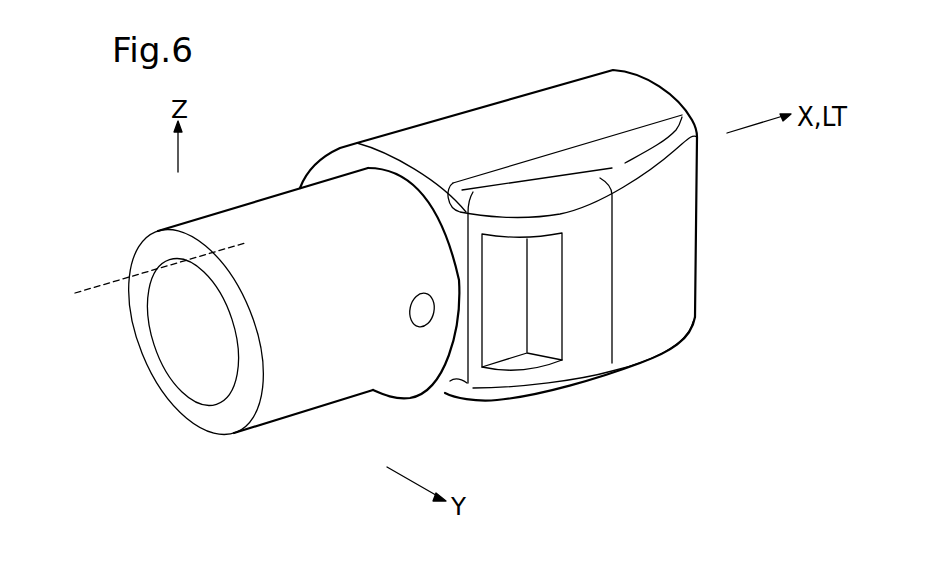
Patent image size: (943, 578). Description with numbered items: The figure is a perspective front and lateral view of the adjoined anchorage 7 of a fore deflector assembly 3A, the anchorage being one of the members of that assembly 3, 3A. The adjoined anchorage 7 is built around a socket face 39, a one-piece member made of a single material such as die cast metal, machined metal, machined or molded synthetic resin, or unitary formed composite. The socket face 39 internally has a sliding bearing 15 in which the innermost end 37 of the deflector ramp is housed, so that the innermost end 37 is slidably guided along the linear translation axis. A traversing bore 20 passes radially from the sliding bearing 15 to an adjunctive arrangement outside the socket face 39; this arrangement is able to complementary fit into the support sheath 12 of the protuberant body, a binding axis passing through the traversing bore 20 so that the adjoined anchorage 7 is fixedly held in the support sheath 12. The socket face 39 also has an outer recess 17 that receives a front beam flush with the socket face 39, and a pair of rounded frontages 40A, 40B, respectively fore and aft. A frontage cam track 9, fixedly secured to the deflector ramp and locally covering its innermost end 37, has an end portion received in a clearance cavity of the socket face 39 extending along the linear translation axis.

The connector 3 is at (427, 266).
The deflector assembly 3A is at (651, 456).
The adjoined anchorage 7 is at (333, 130).
The frontage cam track 9 is at (697, 273).
The support sheath 12 is at (235, 316).
The sliding bearing 15 is at (176, 376).
The socket face 39 is at (194, 402).
The outer recess 17 is at (543, 327).
The traversing bore 20 is at (410, 308).
The innermost end 37 is at (100, 283).
The rounded frontage 40A is at (697, 137).
The rounded frontage 40B is at (490, 400).